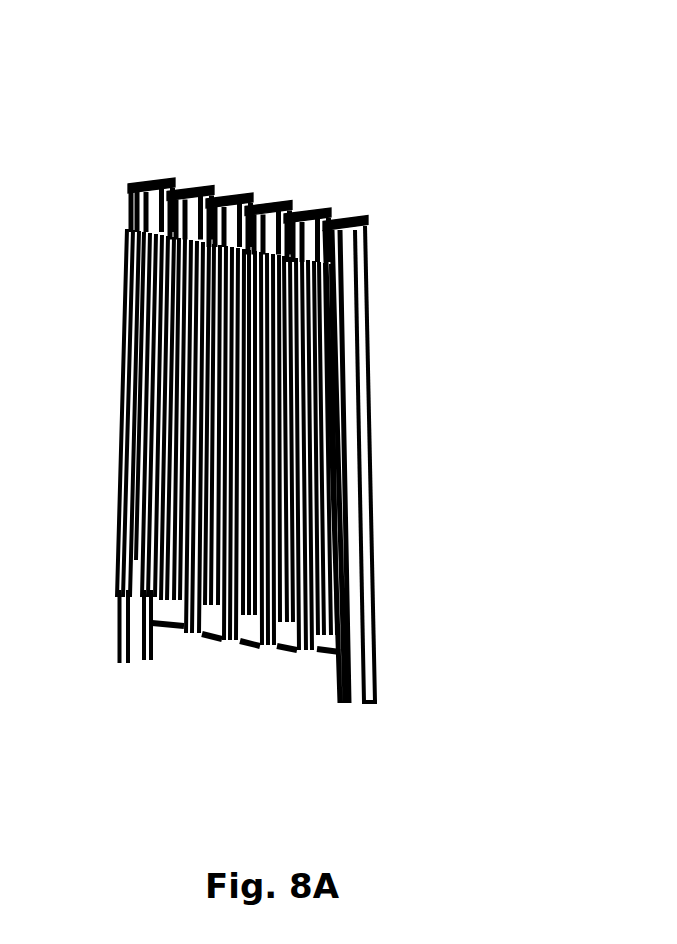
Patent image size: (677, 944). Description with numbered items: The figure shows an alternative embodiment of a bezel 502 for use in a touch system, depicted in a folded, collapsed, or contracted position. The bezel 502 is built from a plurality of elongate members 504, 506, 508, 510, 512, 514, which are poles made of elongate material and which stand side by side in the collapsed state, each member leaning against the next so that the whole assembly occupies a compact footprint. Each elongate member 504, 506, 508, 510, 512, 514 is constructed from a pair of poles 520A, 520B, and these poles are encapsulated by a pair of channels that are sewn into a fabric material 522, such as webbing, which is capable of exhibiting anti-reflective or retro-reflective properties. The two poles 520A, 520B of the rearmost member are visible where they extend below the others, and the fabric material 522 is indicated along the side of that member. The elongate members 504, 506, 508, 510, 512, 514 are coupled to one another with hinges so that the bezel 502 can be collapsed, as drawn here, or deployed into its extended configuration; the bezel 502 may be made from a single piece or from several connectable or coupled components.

The bezel 502 is at (518, 152).
The elongate member 504 is at (370, 326).
The elongate member 506 is at (308, 204).
The elongate member 508 is at (264, 203).
The elongate member 510 is at (229, 193).
The elongate member 512 is at (198, 190).
The elongate member 514 is at (148, 183).
The fabric material 522 is at (349, 430).
The pole 520A is at (374, 667).
The pole 520B is at (335, 682).